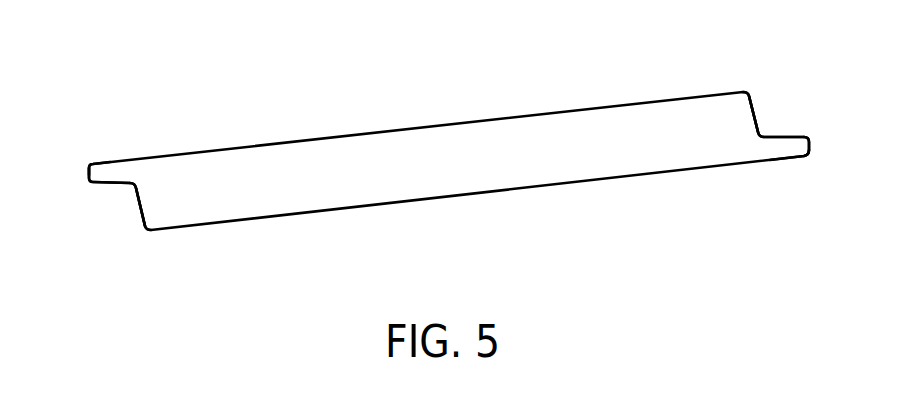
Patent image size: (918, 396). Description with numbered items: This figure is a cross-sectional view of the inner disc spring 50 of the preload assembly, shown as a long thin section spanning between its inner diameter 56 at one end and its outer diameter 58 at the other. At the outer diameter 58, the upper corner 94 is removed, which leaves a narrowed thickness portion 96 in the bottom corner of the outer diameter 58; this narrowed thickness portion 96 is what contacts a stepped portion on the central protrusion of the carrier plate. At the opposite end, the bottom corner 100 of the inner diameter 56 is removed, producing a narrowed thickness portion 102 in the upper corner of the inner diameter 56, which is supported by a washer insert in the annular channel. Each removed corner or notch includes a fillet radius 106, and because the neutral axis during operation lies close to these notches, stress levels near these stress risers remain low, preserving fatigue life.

The inner disc spring 50 is at (467, 84).
The inner diameter 56 is at (88, 183).
The outer diameter 58 is at (811, 148).
The upper corner 94 is at (778, 121).
The narrowed thickness portion 96 is at (793, 157).
The bottom corner 100 is at (118, 205).
The narrowed thickness portion 102 is at (89, 163).
The fillet radius 106 is at (135, 190).